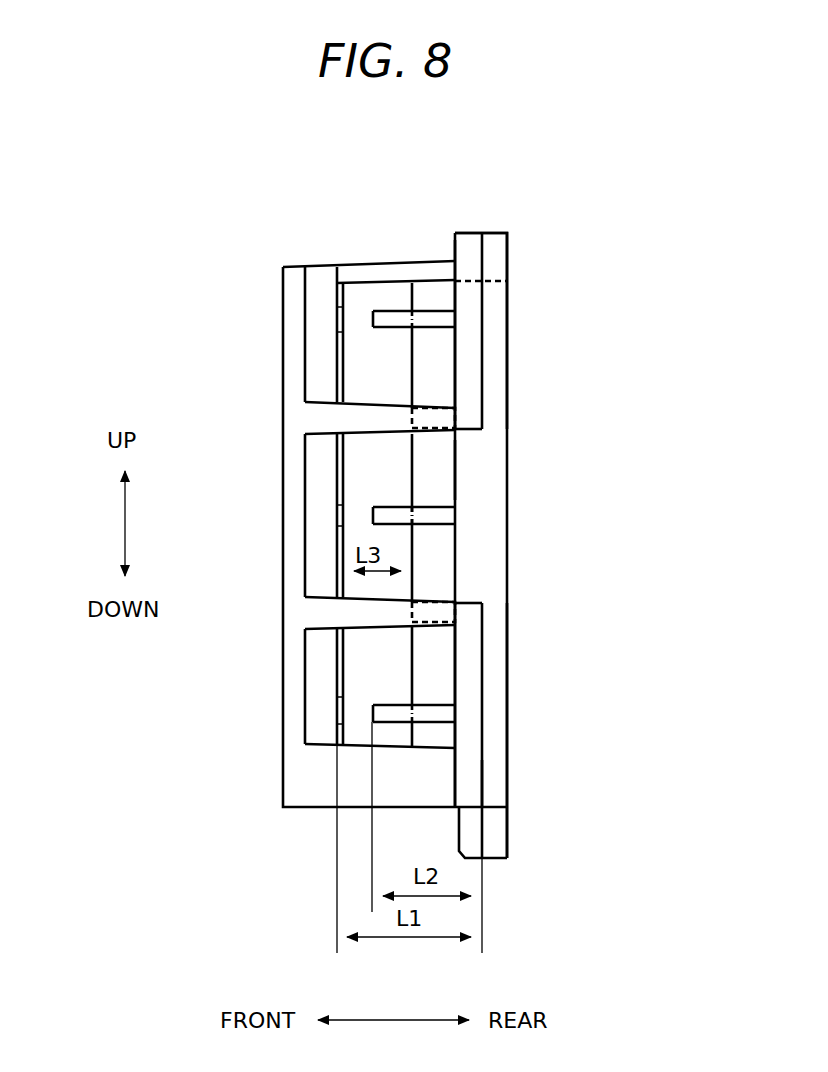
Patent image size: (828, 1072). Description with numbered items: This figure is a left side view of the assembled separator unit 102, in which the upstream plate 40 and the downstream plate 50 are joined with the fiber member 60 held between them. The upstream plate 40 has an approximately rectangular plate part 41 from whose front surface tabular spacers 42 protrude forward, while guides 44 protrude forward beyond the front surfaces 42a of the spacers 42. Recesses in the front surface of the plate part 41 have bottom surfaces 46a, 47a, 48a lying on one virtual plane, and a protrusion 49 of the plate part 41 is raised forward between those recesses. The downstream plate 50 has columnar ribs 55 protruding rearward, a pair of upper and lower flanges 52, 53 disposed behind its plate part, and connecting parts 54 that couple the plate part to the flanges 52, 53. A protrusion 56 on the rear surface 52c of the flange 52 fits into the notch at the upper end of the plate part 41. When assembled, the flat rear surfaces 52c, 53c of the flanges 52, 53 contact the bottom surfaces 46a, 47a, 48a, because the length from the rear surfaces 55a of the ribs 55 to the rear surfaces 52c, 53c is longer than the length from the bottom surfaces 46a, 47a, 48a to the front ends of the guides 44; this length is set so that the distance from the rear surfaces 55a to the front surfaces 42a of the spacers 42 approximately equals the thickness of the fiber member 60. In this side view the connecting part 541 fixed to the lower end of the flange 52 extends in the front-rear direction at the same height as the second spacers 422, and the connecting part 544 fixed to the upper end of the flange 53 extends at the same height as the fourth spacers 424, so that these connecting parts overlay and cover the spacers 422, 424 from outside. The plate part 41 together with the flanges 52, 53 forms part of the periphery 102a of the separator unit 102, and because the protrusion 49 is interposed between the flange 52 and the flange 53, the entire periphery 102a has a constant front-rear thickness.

The separator unit 102 is at (528, 172).
The periphery 102a is at (586, 197).
The upstream plate 40 is at (516, 477).
The plate part 41 is at (507, 256).
The spacers 42 is at (430, 703).
The front surfaces of the spacers 42a is at (413, 520).
The guides 44 is at (385, 703).
The bottom surface of the recess 46a is at (474, 229).
The bottom surface of the recess 47a is at (482, 256).
The bottom surface of the lower recess 48a is at (480, 774).
The protrusion 49 is at (453, 470).
The downstream plate 50 is at (272, 346).
The upper flange 52 is at (483, 247).
The rear surface of the upper flange 52c is at (483, 402).
The lower flange 53 is at (485, 793).
The rear surface of the lower flange 53c is at (485, 635).
The connecting parts 54 is at (367, 598).
The connecting part 544 is at (414, 518).
The connecting part 541 is at (383, 404).
The ribs 55 is at (317, 705).
The rear surfaces of the ribs 55a is at (340, 682).
The protrusion 56 is at (495, 281).
The fiber member 60 is at (353, 302).
The second spacers 422 is at (427, 407).
The fourth spacers 424 is at (425, 600).